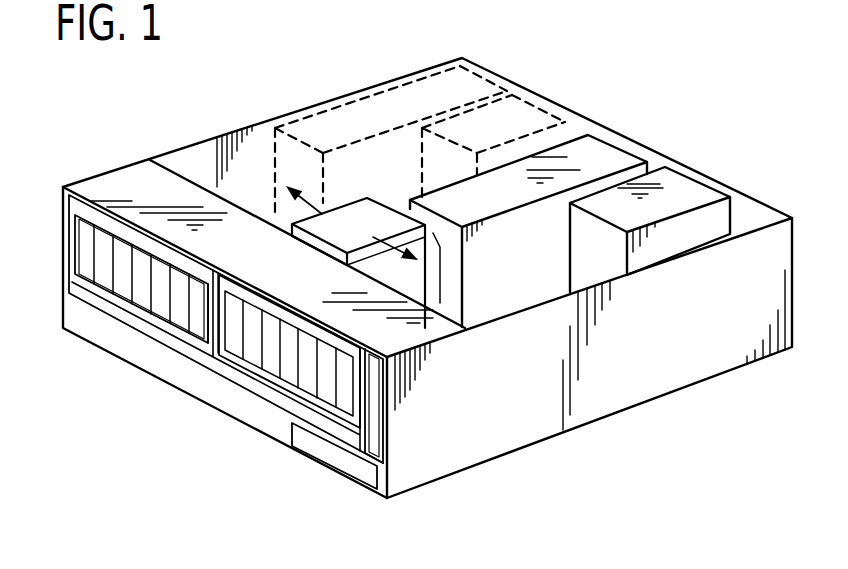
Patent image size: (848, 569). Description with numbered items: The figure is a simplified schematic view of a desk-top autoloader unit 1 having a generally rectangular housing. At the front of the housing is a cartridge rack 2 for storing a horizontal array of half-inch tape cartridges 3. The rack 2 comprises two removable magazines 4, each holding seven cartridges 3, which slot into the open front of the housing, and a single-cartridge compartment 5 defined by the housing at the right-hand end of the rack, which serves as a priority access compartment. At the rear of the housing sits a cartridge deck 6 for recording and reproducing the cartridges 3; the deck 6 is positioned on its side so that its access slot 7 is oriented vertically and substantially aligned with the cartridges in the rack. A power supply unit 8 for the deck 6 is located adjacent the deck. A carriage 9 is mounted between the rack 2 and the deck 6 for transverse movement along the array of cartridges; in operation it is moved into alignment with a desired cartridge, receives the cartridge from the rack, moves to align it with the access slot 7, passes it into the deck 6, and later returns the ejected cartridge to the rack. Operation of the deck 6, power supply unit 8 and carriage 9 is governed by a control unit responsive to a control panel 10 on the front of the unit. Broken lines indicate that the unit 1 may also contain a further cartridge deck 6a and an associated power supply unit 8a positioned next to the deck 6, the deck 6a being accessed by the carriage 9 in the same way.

The desk-top autoloader unit 1 is at (212, 138).
The cartridge rack 2 is at (115, 190).
The tape cartridges 3 is at (100, 283).
The removable magazines 4 is at (230, 372).
The single-cartridge compartment 5 is at (384, 436).
The cartridge deck 6 is at (623, 157).
The further cartridge deck 6a is at (474, 82).
The access slot 7 is at (434, 273).
The power supply unit 8 is at (700, 193).
The associated PSU 8a is at (543, 98).
The carriage 9 is at (367, 203).
The control panel 10 is at (308, 445).